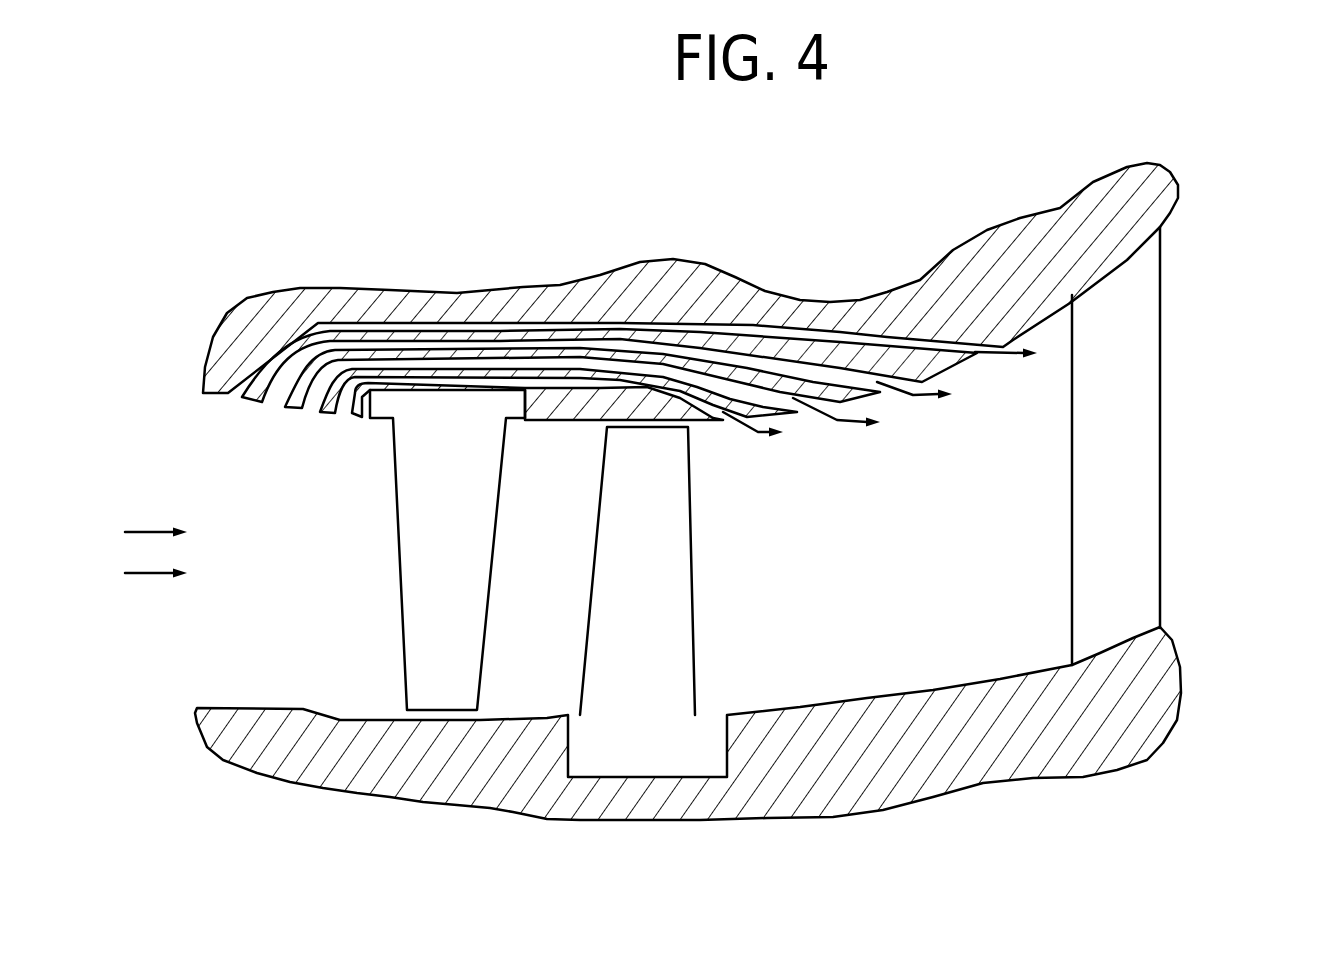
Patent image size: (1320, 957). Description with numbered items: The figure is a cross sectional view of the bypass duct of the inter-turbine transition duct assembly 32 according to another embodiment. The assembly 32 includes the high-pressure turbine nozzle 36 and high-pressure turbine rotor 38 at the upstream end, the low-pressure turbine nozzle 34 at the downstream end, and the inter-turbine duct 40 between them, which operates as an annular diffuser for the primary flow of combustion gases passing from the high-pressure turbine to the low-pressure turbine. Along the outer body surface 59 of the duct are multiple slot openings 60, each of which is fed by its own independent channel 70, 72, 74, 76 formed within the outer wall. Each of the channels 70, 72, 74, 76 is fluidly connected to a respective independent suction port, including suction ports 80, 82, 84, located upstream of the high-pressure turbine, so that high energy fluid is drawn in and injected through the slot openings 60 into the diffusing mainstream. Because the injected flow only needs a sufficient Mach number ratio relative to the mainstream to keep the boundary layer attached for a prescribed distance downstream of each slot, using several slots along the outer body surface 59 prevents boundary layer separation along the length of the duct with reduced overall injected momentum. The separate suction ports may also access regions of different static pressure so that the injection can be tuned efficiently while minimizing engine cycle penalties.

The inter-turbine transition duct assembly 32 is at (298, 208).
The low-pressure turbine nozzle 34 is at (1163, 490).
The high-pressure turbine nozzle 36 is at (458, 546).
The high-pressure turbine rotor 38 is at (655, 571).
The inter-turbine duct 40 is at (932, 810).
The outer body surface 59 is at (213, 398).
The slot opening 60 is at (1000, 353).
The channel 70 is at (437, 317).
The channel 72 is at (512, 337).
The channel 74 is at (567, 360).
The channel 76 is at (620, 377).
The suction port 80 is at (273, 398).
The suction port 82 is at (305, 405).
The suction port 84 is at (340, 413).